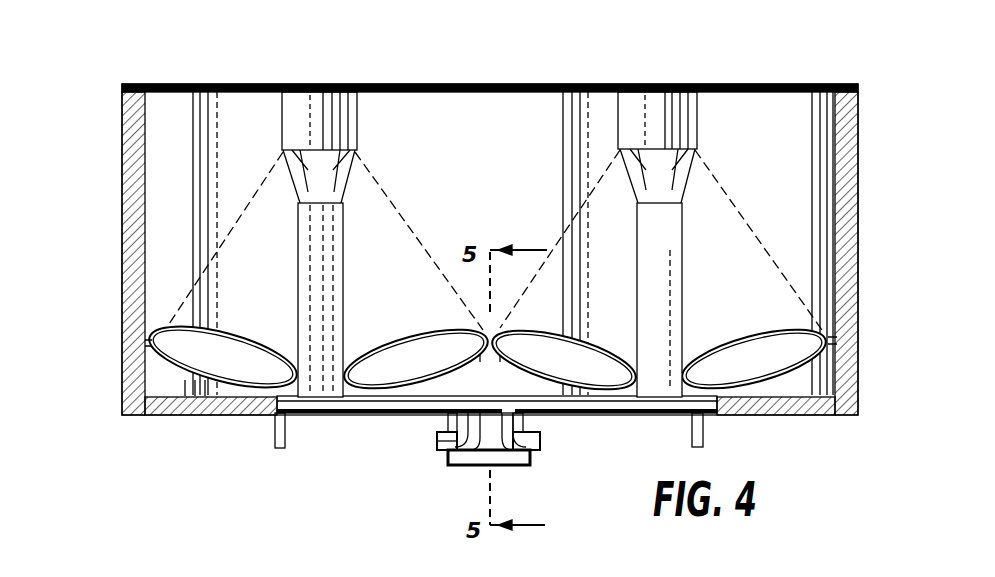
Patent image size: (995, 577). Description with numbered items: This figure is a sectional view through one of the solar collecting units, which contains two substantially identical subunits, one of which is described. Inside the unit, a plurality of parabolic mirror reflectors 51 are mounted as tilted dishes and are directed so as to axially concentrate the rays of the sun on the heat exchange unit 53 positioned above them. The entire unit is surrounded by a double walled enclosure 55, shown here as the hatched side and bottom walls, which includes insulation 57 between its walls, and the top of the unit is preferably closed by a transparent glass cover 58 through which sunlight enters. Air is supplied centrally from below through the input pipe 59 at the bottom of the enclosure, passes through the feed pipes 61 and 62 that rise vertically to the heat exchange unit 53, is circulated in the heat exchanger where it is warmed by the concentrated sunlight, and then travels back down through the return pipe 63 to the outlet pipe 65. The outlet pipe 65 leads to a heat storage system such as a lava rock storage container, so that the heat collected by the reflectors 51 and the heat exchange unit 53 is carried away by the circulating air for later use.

The parabolic mirror reflectors 51 is at (203, 355).
The heat exchange unit 53 is at (330, 97).
The double walled enclosure 55 is at (125, 212).
The insulation 57 is at (128, 264).
The transparent glass cover 58 is at (466, 85).
The input pipe 59 is at (540, 440).
The feed pipe 61 is at (343, 258).
The feed pipe 62 is at (310, 249).
The return pipe 63 is at (320, 303).
The outlet pipe 65 is at (437, 440).